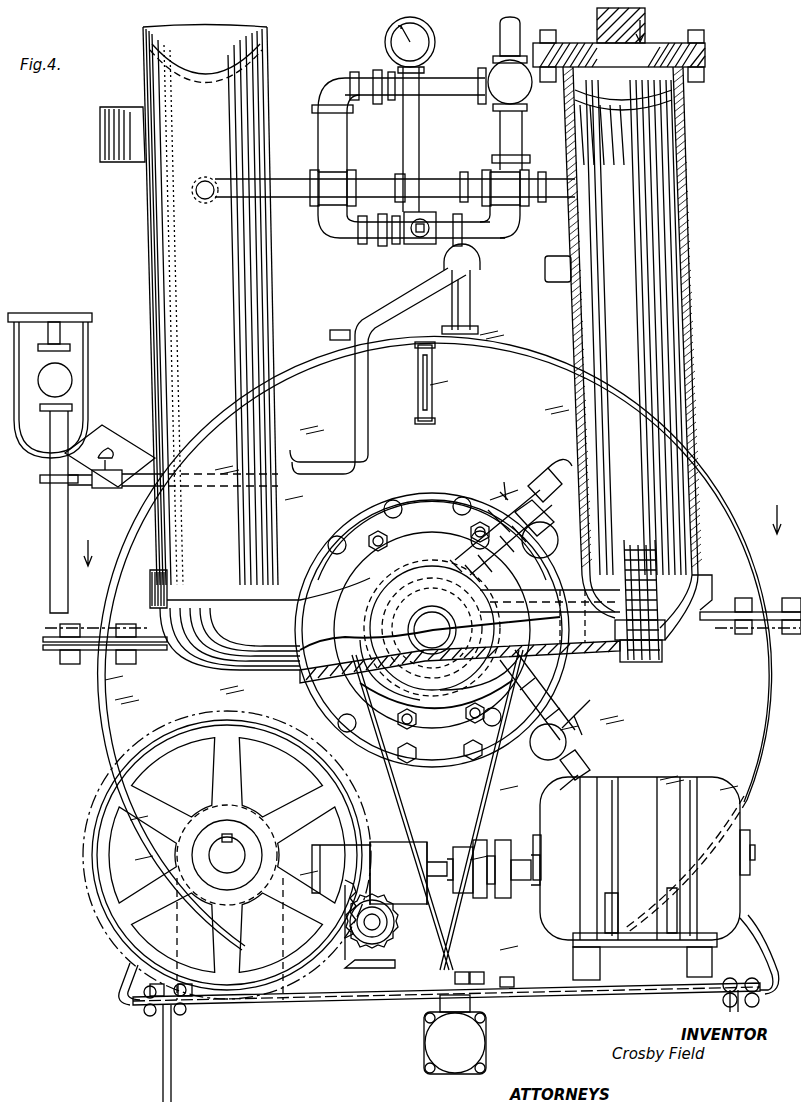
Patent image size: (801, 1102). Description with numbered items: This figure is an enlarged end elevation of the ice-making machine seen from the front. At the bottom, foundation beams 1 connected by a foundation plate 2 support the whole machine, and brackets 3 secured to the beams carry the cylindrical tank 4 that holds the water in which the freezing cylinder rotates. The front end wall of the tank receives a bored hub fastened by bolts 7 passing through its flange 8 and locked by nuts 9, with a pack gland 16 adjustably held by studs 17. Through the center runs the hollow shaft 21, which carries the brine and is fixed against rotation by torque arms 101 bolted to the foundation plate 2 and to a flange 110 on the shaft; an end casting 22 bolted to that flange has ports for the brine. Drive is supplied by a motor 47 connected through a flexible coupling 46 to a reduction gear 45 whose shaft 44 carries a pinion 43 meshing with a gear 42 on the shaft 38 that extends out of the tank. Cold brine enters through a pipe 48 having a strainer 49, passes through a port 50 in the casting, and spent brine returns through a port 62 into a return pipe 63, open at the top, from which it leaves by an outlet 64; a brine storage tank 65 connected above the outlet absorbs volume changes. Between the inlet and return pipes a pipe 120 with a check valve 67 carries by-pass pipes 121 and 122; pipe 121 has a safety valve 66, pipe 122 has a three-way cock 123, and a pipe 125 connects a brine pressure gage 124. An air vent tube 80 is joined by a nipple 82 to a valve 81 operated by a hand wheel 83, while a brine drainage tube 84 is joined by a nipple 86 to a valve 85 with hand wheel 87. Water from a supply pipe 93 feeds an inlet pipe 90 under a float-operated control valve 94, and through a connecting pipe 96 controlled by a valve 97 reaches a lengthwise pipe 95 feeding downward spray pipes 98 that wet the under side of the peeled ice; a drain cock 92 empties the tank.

The foundation beams 1 is at (172, 1057).
The foundation plate 2 is at (345, 1008).
The brackets 3 is at (125, 970).
The cylindrical tank 4 is at (315, 372).
The bolts 7 is at (422, 557).
The flange 8 is at (405, 495).
The nuts 9 is at (338, 536).
The pack gland 16 is at (450, 505).
The studs 17 is at (368, 555).
The hollow shaft 21 is at (390, 674).
The end casting 22 is at (417, 591).
The shaft 38 is at (236, 875).
The gear 42 is at (372, 866).
The pinion 43 is at (385, 900).
The shaft 44 is at (372, 944).
The reduction gear 45 is at (384, 848).
The flexible coupling 46 is at (487, 848).
The motor 47 is at (625, 795).
The pipe 48 is at (690, 352).
The strainer 49 is at (650, 234).
The port 50 is at (479, 681).
The port 62 is at (400, 654).
The return pipe 63 is at (262, 302).
The outlet 64 is at (125, 160).
The brine storage tank 65 is at (262, 83).
The safety valve 66 is at (497, 95).
The check valve 67 is at (425, 172).
The air vent tube 80 is at (442, 590).
The valve 81 is at (543, 508).
The nipple 82 is at (480, 522).
The hand wheel 83 is at (500, 494).
The brine drainage tube 84 is at (530, 626).
The valve 85 is at (568, 742).
The nipple 86 is at (560, 692).
The hand wheel 87 is at (580, 710).
The inlet pipe 90 is at (110, 445).
The drain cock 92 is at (486, 1034).
The pipe 93 is at (50, 546).
The control valve 94 is at (72, 372).
The pipe 95 is at (483, 258).
The connecting pipe 96 is at (298, 460).
The valve 97 is at (125, 492).
The spray pipe 98 is at (478, 292).
The torque arms 101 is at (475, 788).
The flange 110 is at (412, 555).
The pipe 120 is at (280, 185).
The by-pass pipe 121 is at (448, 70).
The by-pass pipe 122 is at (505, 234).
The three-way cock 123 is at (400, 246).
The brine pressure gage 124 is at (386, 28).
The pipe 125 is at (403, 127).